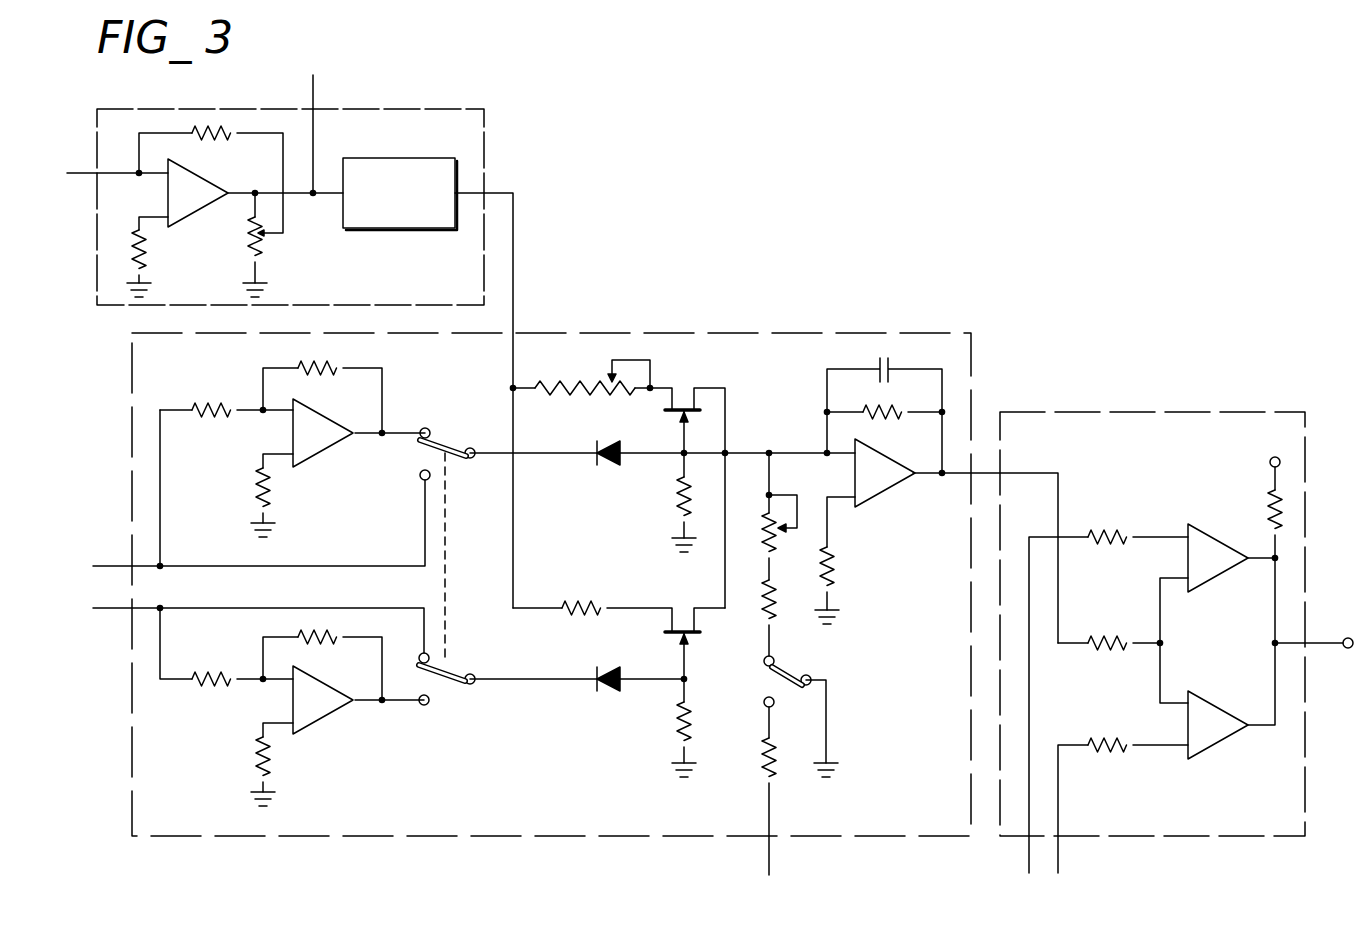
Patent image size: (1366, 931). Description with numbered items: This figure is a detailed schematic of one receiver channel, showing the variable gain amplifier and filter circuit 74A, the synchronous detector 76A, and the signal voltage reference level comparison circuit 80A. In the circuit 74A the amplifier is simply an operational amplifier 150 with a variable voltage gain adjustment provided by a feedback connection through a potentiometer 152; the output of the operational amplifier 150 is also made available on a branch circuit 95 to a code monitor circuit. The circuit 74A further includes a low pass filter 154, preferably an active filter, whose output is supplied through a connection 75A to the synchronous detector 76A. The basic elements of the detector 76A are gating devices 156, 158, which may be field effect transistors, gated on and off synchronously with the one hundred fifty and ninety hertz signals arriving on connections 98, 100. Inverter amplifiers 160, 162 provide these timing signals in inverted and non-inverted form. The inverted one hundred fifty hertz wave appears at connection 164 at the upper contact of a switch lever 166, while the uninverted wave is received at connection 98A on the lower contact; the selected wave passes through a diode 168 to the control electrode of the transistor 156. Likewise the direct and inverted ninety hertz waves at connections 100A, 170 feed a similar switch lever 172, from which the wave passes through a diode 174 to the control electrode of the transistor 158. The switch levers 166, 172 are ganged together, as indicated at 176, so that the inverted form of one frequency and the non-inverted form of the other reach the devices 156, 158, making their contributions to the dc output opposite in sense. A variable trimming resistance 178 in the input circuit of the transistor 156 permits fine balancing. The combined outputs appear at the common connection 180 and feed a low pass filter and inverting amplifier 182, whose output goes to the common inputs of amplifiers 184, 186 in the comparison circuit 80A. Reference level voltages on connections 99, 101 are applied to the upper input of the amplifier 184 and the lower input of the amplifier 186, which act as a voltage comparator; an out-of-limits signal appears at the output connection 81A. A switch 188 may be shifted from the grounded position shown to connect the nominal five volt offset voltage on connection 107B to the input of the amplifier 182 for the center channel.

The branch circuit 95 is at (315, 90).
The variable gain amplifier and filter circuit 74A is at (407, 109).
The operational amplifier 150 is at (186, 222).
The potentiometer 152 is at (268, 236).
The low pass filter 154 is at (390, 229).
The connection 75A is at (513, 253).
The synchronous detector 76A is at (838, 333).
The connection 98 is at (116, 566).
The inverter amplifier 160 is at (302, 465).
The connection 164 is at (404, 435).
The switch lever 166 is at (448, 445).
The connection 98A is at (424, 493).
The ganging 176 is at (445, 565).
The connection 100 is at (115, 608).
The inverter amplifier 162 is at (310, 722).
The connection 100A is at (424, 617).
The switch lever 172 is at (455, 683).
The connection 170 is at (405, 702).
The diode 168 is at (620, 465).
The diode 174 is at (615, 692).
The variable trimming resistance 178 is at (610, 372).
The gating device 156 is at (664, 413).
The gating device 158 is at (664, 636).
The common connection 180 is at (748, 450).
The low pass filter and inverting amplifier 182 is at (875, 490).
The switch 188 is at (787, 670).
The voltage source connection 107B is at (769, 855).
The signal voltage reference level comparison circuit 80A is at (1180, 412).
The connection 99 is at (1029, 857).
The connection 101 is at (1058, 857).
The amplifier 184 is at (1203, 580).
The amplifier 186 is at (1203, 747).
The output connection 81A is at (1350, 624).